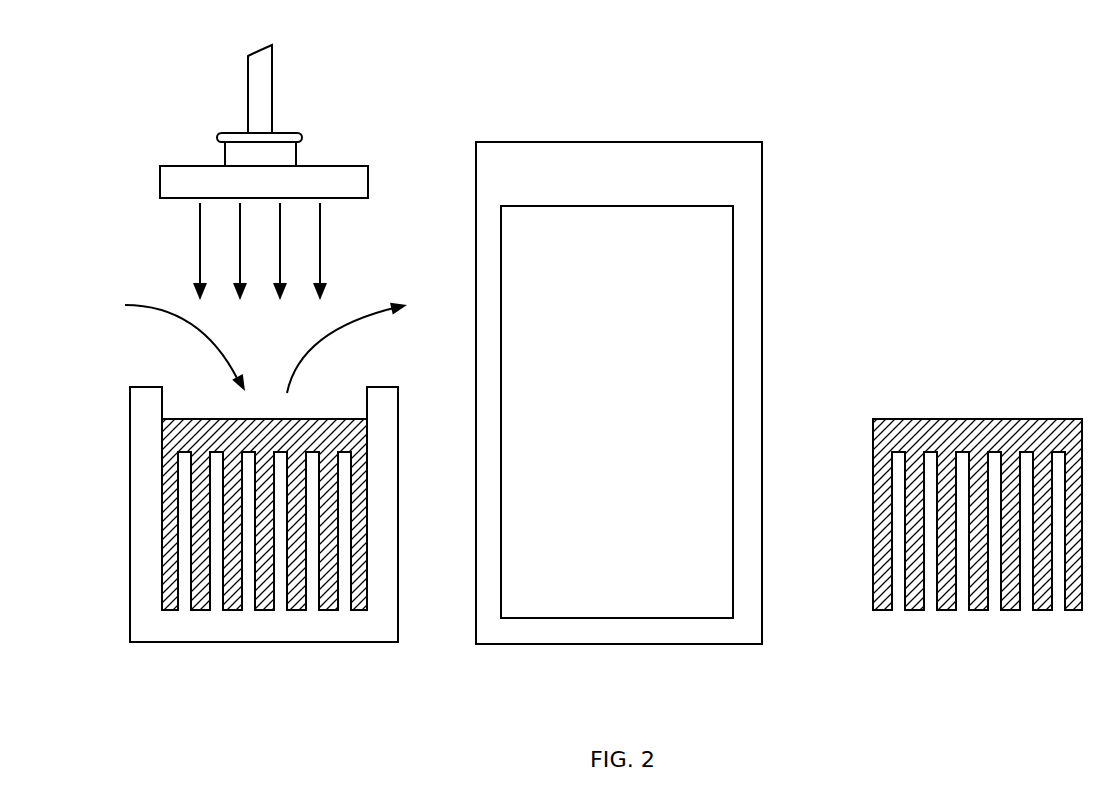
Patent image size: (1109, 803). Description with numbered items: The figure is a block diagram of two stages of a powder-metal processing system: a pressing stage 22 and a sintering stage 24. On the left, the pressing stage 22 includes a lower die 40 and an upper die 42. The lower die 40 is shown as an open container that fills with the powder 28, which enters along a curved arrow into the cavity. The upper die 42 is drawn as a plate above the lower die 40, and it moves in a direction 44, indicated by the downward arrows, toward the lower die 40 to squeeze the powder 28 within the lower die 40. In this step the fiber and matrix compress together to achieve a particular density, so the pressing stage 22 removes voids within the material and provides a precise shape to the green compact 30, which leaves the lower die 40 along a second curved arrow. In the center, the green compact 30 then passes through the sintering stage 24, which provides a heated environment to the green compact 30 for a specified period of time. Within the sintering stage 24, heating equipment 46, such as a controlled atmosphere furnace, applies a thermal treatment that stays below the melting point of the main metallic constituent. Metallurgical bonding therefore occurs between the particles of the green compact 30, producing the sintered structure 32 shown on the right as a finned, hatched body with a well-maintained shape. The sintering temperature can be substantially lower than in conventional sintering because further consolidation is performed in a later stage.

The pressing stage 22 is at (122, 82).
The sintering stage 24 is at (633, 179).
The powder 28 is at (174, 344).
The green compact 30 is at (363, 343).
The sintered structure 32 is at (940, 380).
The lower die 40 is at (343, 633).
The upper die 42 is at (331, 170).
The direction 44 is at (320, 255).
The heating equipment 46 is at (627, 421).